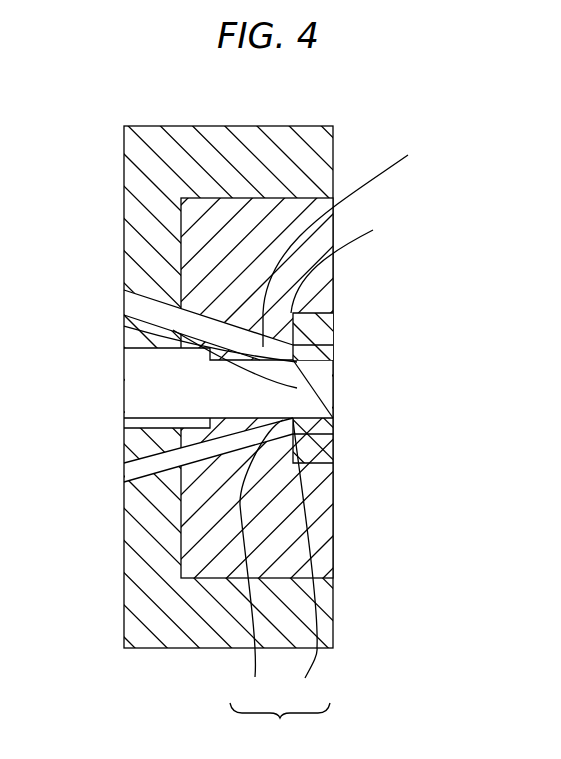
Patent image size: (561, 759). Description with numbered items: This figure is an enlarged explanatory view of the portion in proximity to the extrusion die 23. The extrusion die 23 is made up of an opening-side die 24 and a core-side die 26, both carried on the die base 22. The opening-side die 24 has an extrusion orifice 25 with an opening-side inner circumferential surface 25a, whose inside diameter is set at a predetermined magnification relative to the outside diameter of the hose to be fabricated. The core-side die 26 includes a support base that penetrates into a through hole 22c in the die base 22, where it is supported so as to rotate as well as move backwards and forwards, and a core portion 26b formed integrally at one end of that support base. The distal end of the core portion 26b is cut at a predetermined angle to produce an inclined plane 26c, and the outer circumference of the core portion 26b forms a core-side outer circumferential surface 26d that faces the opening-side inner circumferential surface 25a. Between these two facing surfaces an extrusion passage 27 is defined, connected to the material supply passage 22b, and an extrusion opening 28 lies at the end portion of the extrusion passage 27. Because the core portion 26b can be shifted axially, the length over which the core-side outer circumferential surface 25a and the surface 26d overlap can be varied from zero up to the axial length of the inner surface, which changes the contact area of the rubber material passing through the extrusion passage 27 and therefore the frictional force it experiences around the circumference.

The die base 22 is at (157, 650).
The material supply passage 22b is at (358, 244).
The through hole 22c is at (145, 418).
The extrusion die 23 is at (280, 726).
The opening-side die 24 is at (280, 416).
The extrusion orifice 25 is at (280, 390).
The opening-side inner circumferential surface 25a is at (333, 342).
The core-side die 26 is at (260, 566).
The core portion 26b is at (124, 326).
The inclined plane 26c is at (297, 388).
The core-side outer circumferential surface 26d is at (302, 455).
The extrusion passage 27 is at (350, 267).
The extrusion opening 28 is at (333, 360).